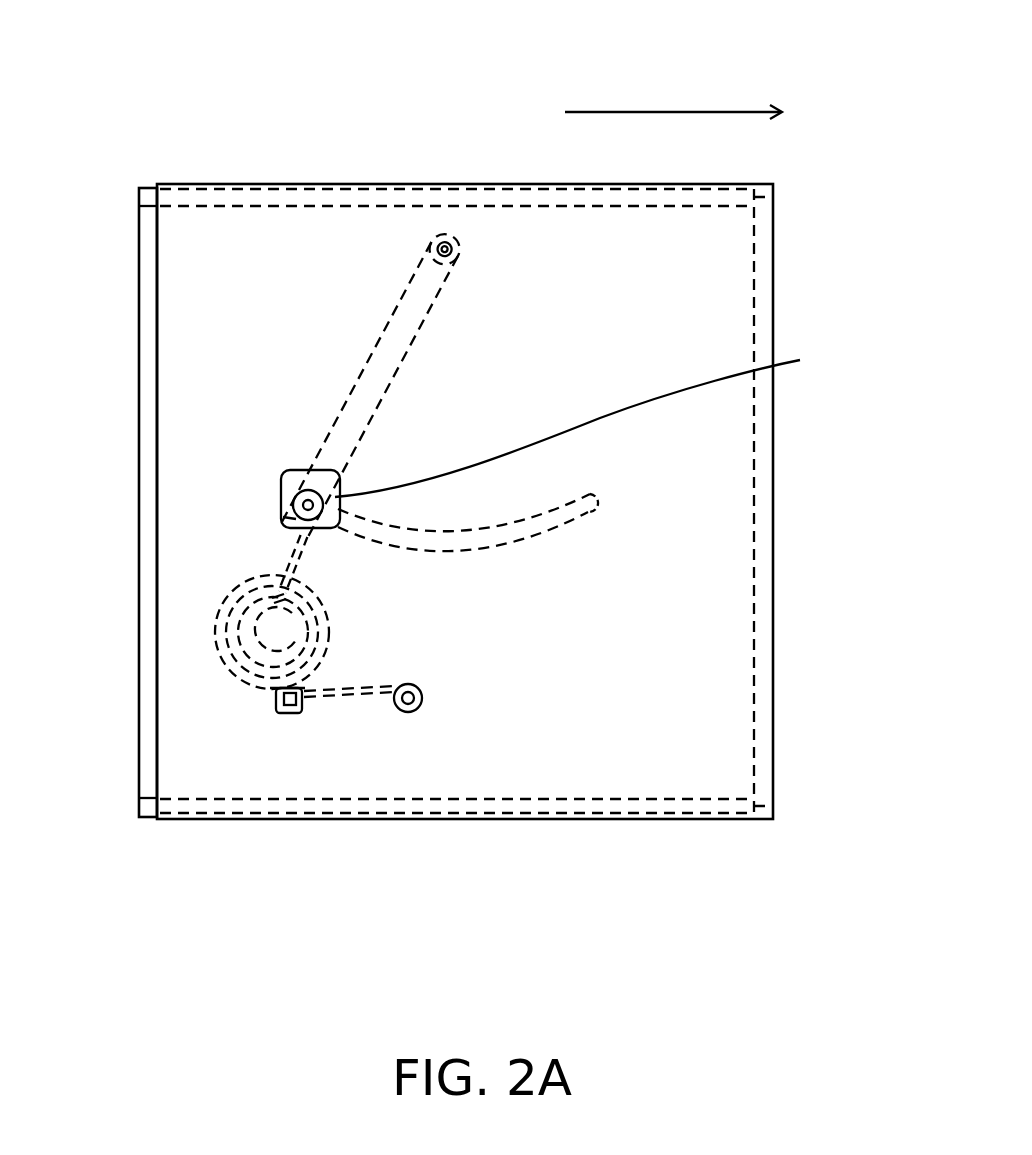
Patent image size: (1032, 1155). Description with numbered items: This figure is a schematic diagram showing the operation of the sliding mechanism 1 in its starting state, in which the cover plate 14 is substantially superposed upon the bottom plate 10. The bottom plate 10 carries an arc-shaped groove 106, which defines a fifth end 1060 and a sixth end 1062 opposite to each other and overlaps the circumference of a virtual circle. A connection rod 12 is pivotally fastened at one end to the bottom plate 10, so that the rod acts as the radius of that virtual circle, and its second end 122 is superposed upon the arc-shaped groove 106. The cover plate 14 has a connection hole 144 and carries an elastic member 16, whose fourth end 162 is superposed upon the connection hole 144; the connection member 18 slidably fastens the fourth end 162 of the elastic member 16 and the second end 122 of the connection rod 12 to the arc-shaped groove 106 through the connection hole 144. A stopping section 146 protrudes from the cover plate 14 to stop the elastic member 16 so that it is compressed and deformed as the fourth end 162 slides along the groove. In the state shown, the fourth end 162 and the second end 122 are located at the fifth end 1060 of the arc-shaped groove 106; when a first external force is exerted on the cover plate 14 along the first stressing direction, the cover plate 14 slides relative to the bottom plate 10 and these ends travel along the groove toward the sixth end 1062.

The sliding mechanism 1 is at (424, 72).
The bottom plate 10 is at (139, 272).
The connection rod 12 is at (390, 320).
The cover plate 14 is at (773, 295).
The elastic member 16 is at (214, 642).
The connection member 18 is at (312, 480).
The arc-shaped groove 106 is at (512, 542).
The second end 122 is at (800, 360).
The connection hole 144 is at (283, 480).
The stopping section 146 is at (291, 713).
The fourth end 162 is at (283, 517).
The fifth end 1060 is at (293, 499).
The sixth end 1062 is at (598, 495).